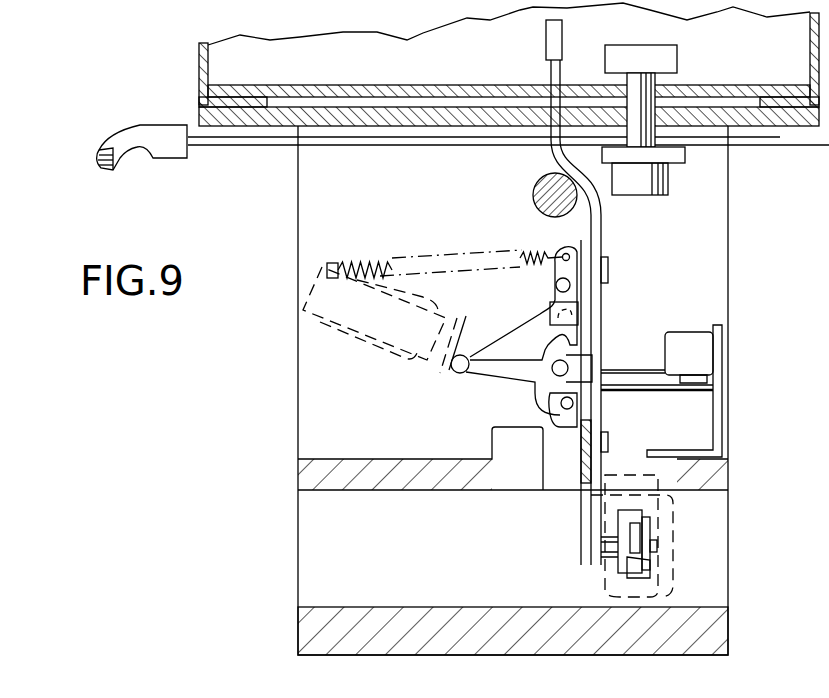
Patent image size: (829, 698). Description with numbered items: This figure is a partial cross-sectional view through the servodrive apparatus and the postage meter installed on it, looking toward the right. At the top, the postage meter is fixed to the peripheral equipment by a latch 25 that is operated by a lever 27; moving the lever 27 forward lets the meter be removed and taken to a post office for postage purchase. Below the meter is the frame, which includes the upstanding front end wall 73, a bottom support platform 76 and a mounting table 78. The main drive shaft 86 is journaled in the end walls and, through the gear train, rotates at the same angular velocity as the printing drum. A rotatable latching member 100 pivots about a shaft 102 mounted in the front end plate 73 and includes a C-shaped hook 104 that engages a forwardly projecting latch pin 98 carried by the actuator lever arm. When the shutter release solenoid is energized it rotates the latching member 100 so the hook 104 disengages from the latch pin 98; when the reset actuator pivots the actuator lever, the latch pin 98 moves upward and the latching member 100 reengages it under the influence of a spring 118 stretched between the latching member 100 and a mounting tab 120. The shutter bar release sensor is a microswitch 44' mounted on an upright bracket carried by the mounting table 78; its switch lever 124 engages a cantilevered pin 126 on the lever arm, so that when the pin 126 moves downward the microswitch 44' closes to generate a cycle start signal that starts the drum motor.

The latch 25 is at (677, 57).
The lever 27 is at (96, 153).
The front end wall 73 is at (728, 238).
The bottom support platform 76 is at (330, 607).
The mounting table 78 is at (300, 484).
The main drive shaft 86 is at (540, 183).
The latch pin 98 is at (548, 412).
The latching member 100 is at (465, 375).
The pivot shaft 102 is at (568, 355).
The C-shaped hook 104 is at (588, 426).
The spring 118 is at (360, 268).
The mounting tab 120 is at (329, 263).
The switch lever 124 is at (713, 390).
The cantilevered pin 126 is at (655, 392).
The microswitch 44' is at (715, 368).